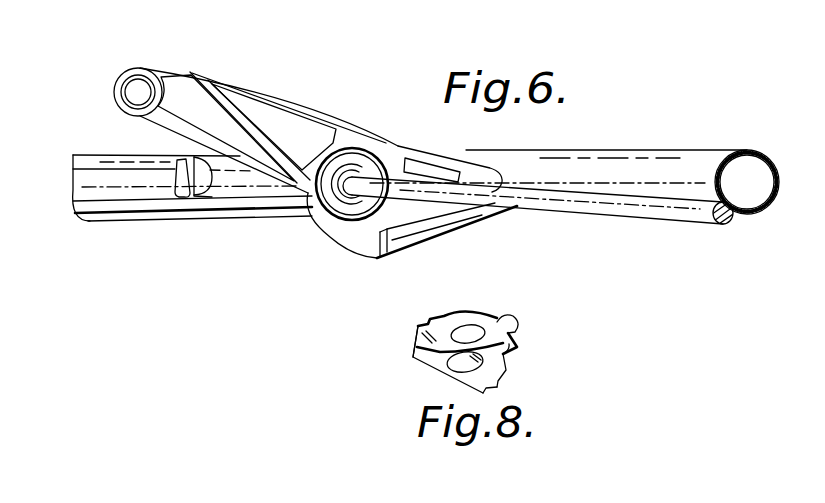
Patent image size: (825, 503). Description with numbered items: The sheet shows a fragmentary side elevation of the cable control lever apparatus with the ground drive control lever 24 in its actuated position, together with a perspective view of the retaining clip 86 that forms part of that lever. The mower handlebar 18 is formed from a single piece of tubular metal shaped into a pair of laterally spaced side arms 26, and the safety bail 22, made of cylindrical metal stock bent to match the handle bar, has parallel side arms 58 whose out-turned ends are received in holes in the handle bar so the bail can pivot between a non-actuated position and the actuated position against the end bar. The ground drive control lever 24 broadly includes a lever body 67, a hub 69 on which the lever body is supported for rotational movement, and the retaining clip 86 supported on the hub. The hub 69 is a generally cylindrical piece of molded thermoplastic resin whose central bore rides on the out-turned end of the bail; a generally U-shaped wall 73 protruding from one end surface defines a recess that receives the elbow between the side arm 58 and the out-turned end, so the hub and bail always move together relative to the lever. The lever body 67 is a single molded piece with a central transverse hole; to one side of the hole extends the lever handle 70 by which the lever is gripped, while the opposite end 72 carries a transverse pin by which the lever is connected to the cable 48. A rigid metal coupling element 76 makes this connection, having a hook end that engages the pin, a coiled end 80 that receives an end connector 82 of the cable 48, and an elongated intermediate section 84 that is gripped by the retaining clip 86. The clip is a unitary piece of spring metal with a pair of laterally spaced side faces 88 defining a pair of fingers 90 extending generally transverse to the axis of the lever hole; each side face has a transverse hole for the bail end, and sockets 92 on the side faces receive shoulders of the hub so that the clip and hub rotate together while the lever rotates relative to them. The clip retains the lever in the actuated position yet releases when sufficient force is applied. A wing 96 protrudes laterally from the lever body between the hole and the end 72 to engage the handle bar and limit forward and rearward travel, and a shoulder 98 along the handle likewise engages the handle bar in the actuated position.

In FIG. 6, the handlebar 18 is at (753, 139).
In FIG. 6, the safety bail 22 is at (722, 228).
In FIG. 6, the ground drive control lever 24 is at (328, 101).
In FIG. 6, the side arm 26 is at (643, 167).
In FIG. 6, the cable 48 is at (100, 170).
In FIG. 6, the side arm 58 is at (640, 213).
In FIG. 6, the lever body 67 is at (394, 150).
In FIG. 6, the hub 69 is at (328, 221).
In FIG. 6, the lever handle 70 is at (177, 93).
In FIG. 6, the opposite end 72 is at (480, 211).
In FIG. 6, the U-shaped wall 73 is at (372, 176).
In FIG. 6, the coupling element 76 is at (203, 211).
In FIG. 6, the coiled end 80 is at (175, 160).
In FIG. 6, the end connector 82 is at (210, 175).
In FIG. 6, the elongated intermediate section 84 is at (237, 197).
In FIG. 8, the retaining clip 86 is at (509, 334).
In FIG. 8, the side faces 88 is at (458, 322).
In FIG. 8, the fingers 90 is at (519, 322).
In FIG. 8, the sockets 92 is at (431, 318).
In FIG. 6, the wing 96 is at (382, 258).
In FIG. 6, the shoulder 98 is at (261, 122).